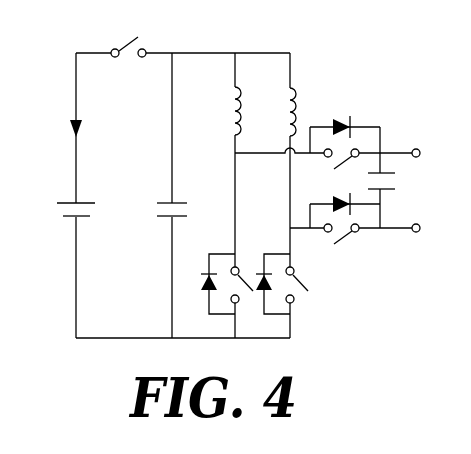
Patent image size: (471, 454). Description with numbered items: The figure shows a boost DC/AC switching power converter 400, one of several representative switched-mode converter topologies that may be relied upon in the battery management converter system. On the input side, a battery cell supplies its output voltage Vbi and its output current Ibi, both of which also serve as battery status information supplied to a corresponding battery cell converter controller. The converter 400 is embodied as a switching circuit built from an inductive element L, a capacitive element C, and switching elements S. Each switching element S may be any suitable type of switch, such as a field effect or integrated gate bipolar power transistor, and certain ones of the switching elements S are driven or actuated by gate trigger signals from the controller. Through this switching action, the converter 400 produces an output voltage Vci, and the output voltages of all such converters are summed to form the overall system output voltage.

The boost DC/AC switching power converter 400 is at (40, 41).
The battery cell output current Ibi is at (93, 128).
The battery cell output voltage Vbi is at (95, 214).
The capacitive element C is at (179, 195).
The inductive element L is at (256, 111).
The switching element S is at (296, 226).
The output voltage Vci is at (402, 188).